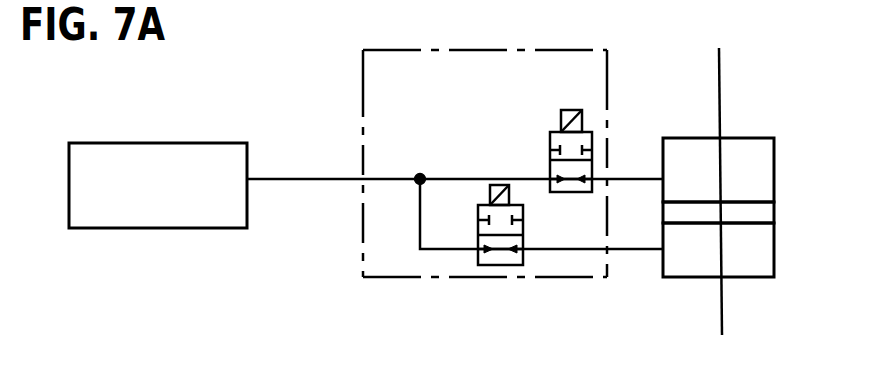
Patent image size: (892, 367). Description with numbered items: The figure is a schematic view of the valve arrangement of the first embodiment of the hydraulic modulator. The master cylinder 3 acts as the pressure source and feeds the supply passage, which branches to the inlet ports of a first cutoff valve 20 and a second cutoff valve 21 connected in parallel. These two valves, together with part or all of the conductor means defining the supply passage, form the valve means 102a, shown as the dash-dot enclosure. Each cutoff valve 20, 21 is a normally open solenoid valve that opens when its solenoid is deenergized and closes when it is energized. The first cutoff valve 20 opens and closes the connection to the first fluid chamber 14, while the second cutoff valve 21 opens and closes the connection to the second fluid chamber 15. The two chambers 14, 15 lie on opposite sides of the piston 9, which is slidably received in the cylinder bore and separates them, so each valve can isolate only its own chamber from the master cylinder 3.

The master cylinder 3 is at (176, 143).
The valve means 102a is at (412, 50).
The first cutoff valve 20 is at (550, 152).
The second cutoff valve 21 is at (523, 210).
The first fluid chamber 14 is at (767, 176).
The piston 9 is at (767, 212).
The second fluid chamber 15 is at (765, 249).